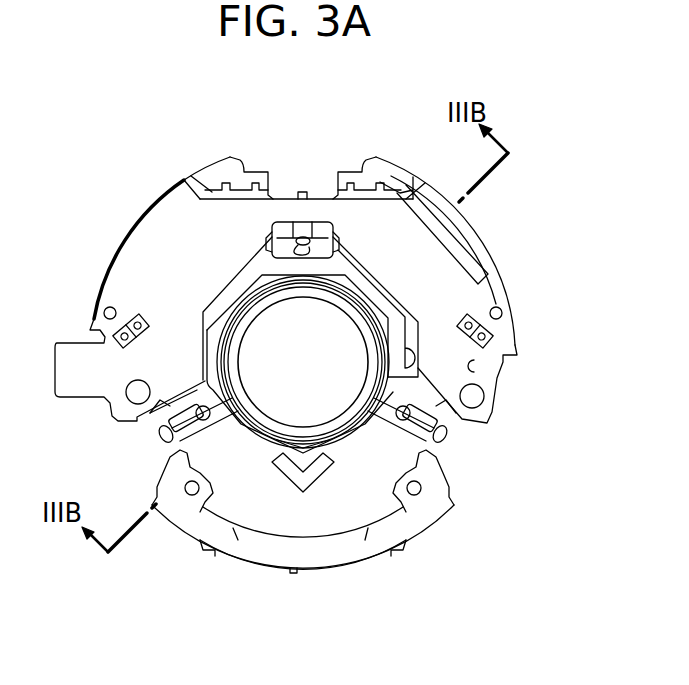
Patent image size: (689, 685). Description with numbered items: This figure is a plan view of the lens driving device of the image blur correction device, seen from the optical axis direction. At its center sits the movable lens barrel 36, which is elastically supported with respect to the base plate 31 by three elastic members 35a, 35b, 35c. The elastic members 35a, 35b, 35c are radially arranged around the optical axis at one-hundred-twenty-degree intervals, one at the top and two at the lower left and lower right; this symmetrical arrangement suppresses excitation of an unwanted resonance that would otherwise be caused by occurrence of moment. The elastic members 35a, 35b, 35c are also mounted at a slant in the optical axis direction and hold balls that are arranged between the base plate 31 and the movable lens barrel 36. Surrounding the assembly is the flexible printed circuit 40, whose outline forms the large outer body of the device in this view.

The flexible printed circuit 40 is at (150, 250).
The elastic member 35a is at (307, 227).
The movable lens barrel 36 is at (373, 312).
The elastic member 35b is at (173, 436).
The elastic member 35c is at (430, 455).
The base plate 31 is at (339, 512).